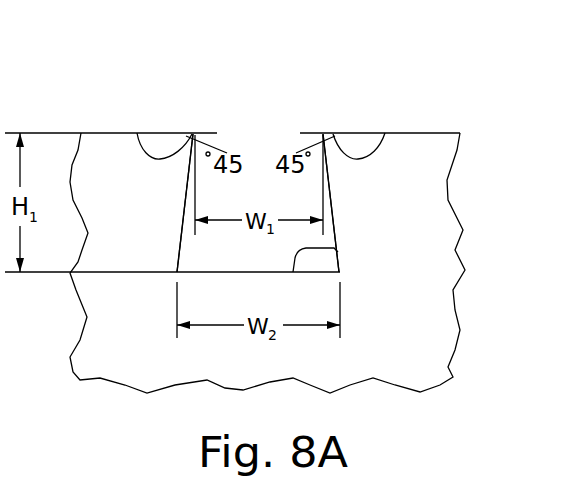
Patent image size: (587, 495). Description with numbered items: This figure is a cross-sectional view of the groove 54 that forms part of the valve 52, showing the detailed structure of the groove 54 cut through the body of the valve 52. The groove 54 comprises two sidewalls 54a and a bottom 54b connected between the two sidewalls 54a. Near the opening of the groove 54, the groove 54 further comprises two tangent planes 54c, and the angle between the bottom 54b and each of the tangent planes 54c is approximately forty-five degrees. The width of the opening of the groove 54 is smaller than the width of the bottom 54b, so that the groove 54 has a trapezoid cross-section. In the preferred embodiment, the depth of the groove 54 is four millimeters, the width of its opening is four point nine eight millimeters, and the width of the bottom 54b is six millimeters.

The valve 52 is at (433, 302).
The groove 54 is at (260, 120).
The sidewalls 54a is at (188, 200).
The bottom 54b is at (335, 249).
The tangent planes 54c is at (137, 133).